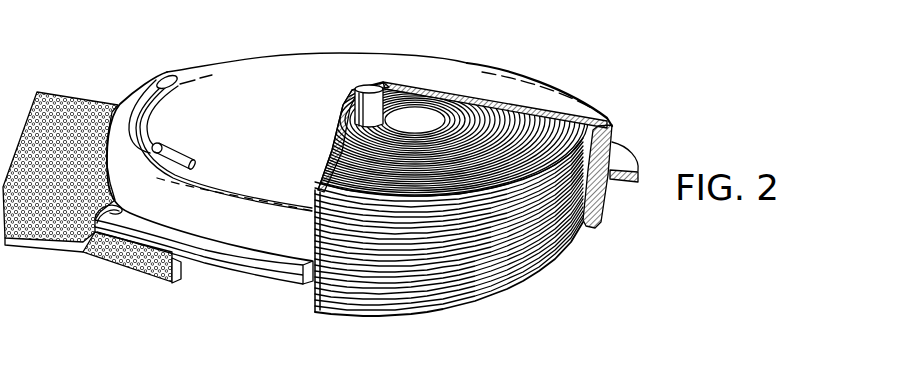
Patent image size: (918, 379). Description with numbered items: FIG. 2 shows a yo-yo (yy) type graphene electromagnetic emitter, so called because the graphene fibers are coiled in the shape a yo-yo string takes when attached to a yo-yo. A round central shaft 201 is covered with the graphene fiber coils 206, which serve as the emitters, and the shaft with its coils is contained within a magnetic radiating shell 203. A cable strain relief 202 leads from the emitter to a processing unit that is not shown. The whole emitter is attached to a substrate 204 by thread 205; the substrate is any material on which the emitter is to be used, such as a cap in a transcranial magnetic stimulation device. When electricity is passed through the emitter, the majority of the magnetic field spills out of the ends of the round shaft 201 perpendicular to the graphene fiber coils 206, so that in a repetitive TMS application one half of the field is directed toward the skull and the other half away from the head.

The round central shaft 201 is at (369, 97).
The cable strain relief 202 is at (156, 91).
The magnetic radiating shell 203 is at (293, 130).
The substrate 204 is at (48, 230).
The thread 205 is at (95, 220).
The graphene fiber coils 206 is at (400, 298).